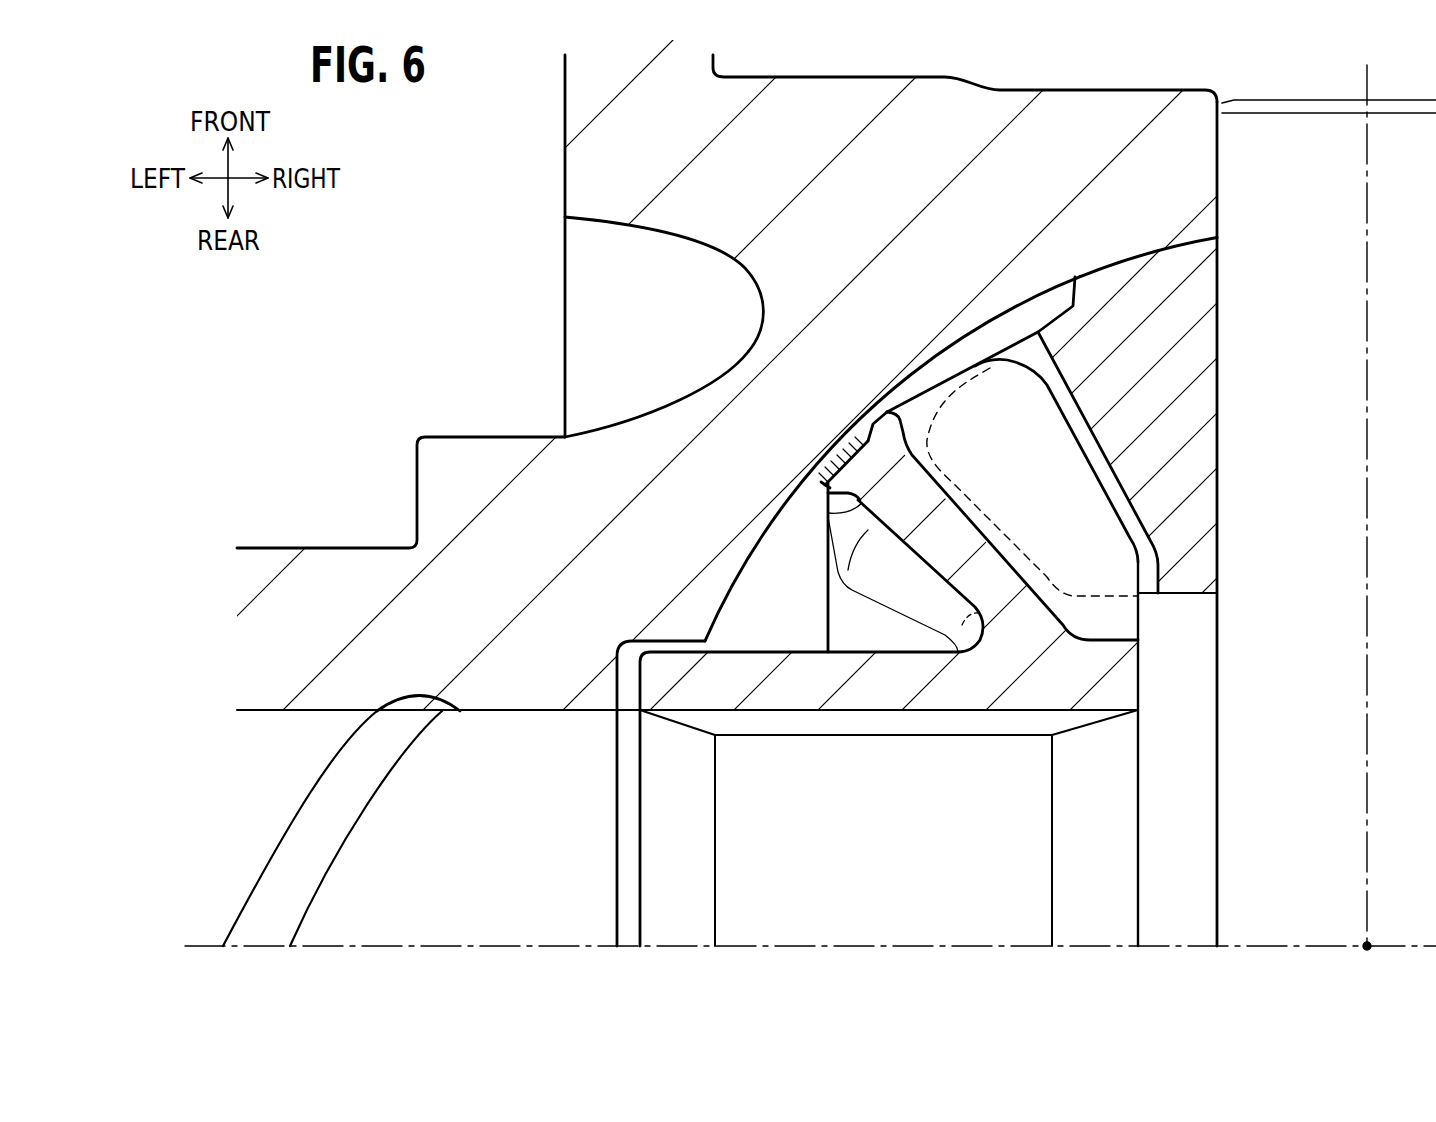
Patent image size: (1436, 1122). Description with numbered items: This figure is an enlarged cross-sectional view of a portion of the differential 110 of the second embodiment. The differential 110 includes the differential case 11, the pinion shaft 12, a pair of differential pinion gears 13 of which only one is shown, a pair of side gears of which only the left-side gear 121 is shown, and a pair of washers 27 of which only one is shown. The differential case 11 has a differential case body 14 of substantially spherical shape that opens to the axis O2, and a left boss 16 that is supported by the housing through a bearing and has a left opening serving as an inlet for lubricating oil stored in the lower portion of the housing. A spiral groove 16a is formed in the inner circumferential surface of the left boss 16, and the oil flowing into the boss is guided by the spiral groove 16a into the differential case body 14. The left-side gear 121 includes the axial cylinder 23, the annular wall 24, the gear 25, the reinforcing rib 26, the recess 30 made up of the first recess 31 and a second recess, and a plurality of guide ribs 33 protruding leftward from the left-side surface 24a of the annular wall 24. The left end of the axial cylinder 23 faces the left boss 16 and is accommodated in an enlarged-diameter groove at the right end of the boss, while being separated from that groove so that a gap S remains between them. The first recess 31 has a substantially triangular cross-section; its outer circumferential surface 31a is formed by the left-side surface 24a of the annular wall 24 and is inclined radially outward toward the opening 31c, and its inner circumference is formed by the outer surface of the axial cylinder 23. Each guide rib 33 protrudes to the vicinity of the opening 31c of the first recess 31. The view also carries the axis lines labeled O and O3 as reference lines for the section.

The differential 110 is at (497, 342).
The differential case 11 is at (1202, 181).
The pinion shaft 12 is at (1230, 798).
The differential pinion gear 13 is at (1203, 338).
The differential case body 14 is at (903, 198).
The left boss 16 is at (260, 676).
The spiral groove 16a is at (365, 785).
The axial cylinder 23 is at (870, 683).
The annular wall 24 is at (879, 427).
The left-side surface of the annular wall 24a is at (818, 527).
The gear 25 is at (1018, 377).
The reinforcing rib 26 is at (884, 420).
The washer 27 is at (832, 452).
The recess 30 is at (893, 641).
The first recess 31 is at (915, 576).
The outer circumferential surface of the first recess 31a is at (846, 463).
The opening 31c is at (828, 606).
The guide rib 33 is at (832, 527).
The left-side gear 121 is at (1146, 670).
The gap S is at (626, 712).
The axis center O is at (1367, 946).
The axis O2 is at (775, 946).
The radial axis O3 is at (1367, 383).